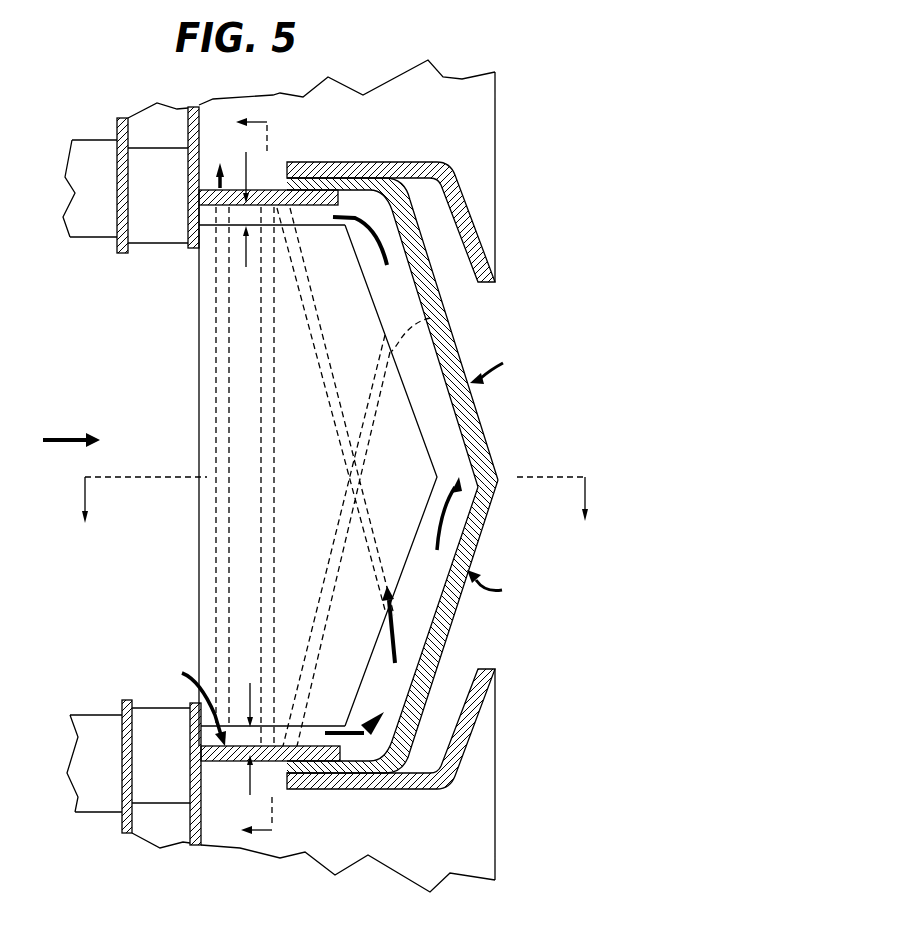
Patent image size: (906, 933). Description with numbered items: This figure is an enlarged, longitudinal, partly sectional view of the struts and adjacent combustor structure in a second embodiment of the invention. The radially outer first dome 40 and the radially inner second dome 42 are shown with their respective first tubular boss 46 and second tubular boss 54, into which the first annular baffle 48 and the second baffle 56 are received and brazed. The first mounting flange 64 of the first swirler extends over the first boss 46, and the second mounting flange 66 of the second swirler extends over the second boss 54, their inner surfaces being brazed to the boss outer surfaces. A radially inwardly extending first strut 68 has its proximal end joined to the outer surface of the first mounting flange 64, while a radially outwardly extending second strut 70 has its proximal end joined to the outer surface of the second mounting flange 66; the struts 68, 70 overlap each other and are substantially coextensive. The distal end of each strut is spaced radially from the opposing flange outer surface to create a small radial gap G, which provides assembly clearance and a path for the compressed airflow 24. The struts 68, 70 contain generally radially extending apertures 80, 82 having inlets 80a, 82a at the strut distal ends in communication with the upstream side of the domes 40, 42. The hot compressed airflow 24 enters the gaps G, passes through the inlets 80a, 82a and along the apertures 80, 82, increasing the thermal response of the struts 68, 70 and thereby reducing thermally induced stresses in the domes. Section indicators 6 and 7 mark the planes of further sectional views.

The airflow 24 is at (68, 433).
The first dome 40 is at (409, 332).
The second dome 42 is at (411, 626).
The first tubular boss 46 is at (381, 179).
The first annular baffle 48 is at (495, 176).
The second tubular boss 54 is at (360, 774).
The second baffle 56 is at (497, 795).
The first mounting flange 64 is at (205, 188).
The second mounting flange 66 is at (208, 764).
The first strut 68 is at (199, 502).
The second strut 70 is at (307, 727).
The apertures of first strut 80 is at (365, 493).
The inlet of aperture 80a is at (392, 608).
The apertures of second strut 82 is at (375, 378).
The inlet of aperture 82a is at (447, 316).
The section line 6- 6 is at (263, 477).
The section line 7- 7 is at (338, 516).
The radial gap G is at (250, 473).